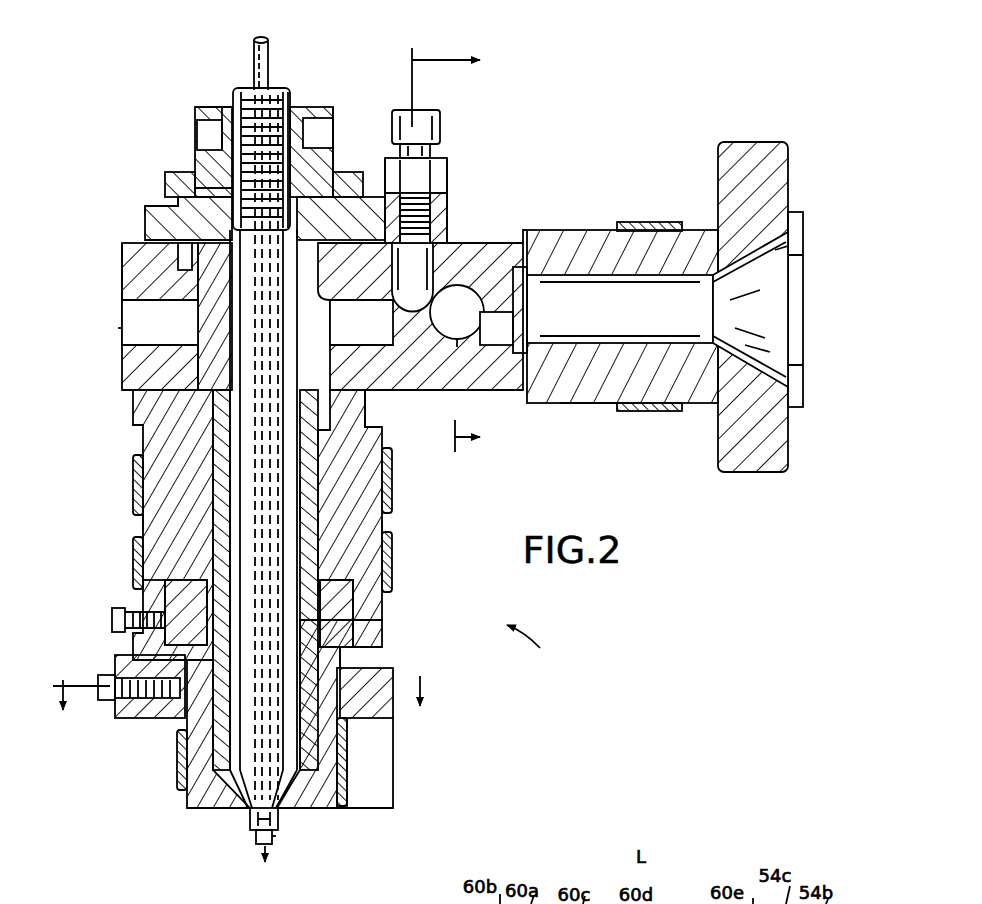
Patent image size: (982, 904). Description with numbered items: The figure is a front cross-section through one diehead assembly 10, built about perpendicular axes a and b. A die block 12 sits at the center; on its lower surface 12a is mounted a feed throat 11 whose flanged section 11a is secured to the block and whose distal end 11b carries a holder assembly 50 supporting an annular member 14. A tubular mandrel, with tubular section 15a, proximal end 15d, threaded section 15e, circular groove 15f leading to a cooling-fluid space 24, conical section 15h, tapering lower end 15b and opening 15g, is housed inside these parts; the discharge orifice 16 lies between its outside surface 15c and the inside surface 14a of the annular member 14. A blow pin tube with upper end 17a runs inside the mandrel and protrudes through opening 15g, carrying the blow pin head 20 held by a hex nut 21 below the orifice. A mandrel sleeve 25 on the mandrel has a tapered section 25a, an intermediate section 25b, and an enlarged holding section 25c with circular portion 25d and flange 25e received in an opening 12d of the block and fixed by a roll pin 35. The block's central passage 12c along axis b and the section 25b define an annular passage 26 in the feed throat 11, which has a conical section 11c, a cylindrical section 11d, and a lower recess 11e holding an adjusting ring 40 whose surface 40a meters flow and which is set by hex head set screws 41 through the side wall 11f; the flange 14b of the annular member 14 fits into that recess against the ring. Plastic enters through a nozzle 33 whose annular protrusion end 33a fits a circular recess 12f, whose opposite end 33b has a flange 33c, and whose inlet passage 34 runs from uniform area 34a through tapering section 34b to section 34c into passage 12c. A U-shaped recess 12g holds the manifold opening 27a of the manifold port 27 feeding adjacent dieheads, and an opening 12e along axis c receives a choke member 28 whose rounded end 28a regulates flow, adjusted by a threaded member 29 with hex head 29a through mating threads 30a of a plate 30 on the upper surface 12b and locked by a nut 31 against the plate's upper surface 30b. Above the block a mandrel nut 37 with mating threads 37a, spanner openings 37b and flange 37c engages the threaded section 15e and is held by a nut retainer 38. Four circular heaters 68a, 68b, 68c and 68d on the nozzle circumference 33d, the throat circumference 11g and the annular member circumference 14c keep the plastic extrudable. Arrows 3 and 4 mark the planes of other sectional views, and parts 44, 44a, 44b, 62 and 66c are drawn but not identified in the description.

The diehead assembly 10 is at (534, 646).
The feed throat 11 is at (340, 478).
The flanged section 11a is at (150, 406).
The distal end 11b is at (134, 660).
The conical section 11c is at (160, 418).
The cylindrical section 11d is at (176, 498).
The lower cylindrical recess 11e is at (176, 590).
The side wall 11f is at (140, 647).
The outside circumference 11g is at (386, 538).
The die block 12 is at (524, 395).
The lower surface 12a is at (140, 380).
The upper surface 12b is at (332, 230).
The central passage 12c is at (370, 402).
The opening 12d is at (176, 290).
The opening 12e is at (504, 243).
The circular recess 12f is at (528, 260).
The U-cross-sectioned recess 12g is at (482, 330).
The annular member 14 is at (370, 718).
The inside surface 14a is at (348, 790).
The flange 14b is at (354, 647).
The outside circumference 14c is at (364, 806).
The tubular section 15a is at (262, 408).
The lower end 15b is at (215, 760).
The outside surface 15c is at (302, 800).
The proximal end 15d is at (262, 95).
The threaded section 15e is at (288, 110).
The circular groove 15f is at (180, 253).
The circular cross-sectioned opening 15g is at (280, 810).
The conical section 15h is at (222, 810).
The discharge orifice 16 is at (246, 806).
The upper end of blow pin 17a is at (268, 85).
The blow pin head 20 is at (252, 830).
The hex nut 21 is at (277, 845).
The space 24 is at (213, 335).
The mandrel sleeve 25 is at (222, 468).
The tapered section 25a is at (319, 660).
The intermediate section 25b is at (310, 500).
The enlarged holding section 25c is at (128, 303).
The circular cross-sectioned portion 25d is at (332, 298).
The flange 25e is at (350, 178).
The annular passage 26 is at (356, 468).
The manifold port 27 is at (443, 305).
The manifold opening 27a is at (450, 347).
The choke member 28 is at (411, 302).
The rounded end 28a is at (398, 336).
The threaded member 29 is at (448, 226).
The hex head 29a is at (438, 124).
The plate 30 is at (448, 205).
The mating threads 30a is at (447, 192).
The upper surface 30b is at (432, 152).
The nut 31 is at (392, 165).
The nozzle 33 is at (585, 403).
The annular protrusion end 33a is at (528, 298).
The opposite end 33b is at (798, 216).
The flange 33c is at (775, 158).
The outside circumference 33d is at (600, 404).
The injector inlet passage 34 is at (782, 251).
The uniform circular cross-sectioned area 34a is at (796, 270).
The tapered section 34b is at (764, 313).
The uniform section 34c is at (632, 323).
The roll pin 35 is at (172, 258).
The mandrel nut 37 is at (215, 107).
The mating threads 37a is at (197, 110).
The spanner openings 37b is at (202, 136).
The flange 37c is at (196, 188).
The nut retainer 38 is at (180, 180).
The adjusting ring 40 is at (176, 610).
The surface 40a is at (340, 615).
The hex head set screws 41 is at (112, 620).
The collar 44 is at (158, 232).
The collar step 44a is at (172, 210).
The collar edge 44b is at (146, 203).
The holder assembly 50 is at (140, 718).
The clamp screw head 62 is at (110, 700).
The clamp screw thread 66c is at (115, 688).
The circular heater 68a is at (645, 222).
The circular heater 68b is at (137, 510).
The circular heater 68c is at (136, 555).
The circular heater 68d is at (348, 760).
The section line 3 is at (240, 712).
The section line 4 is at (459, 251).
The axis a— a is at (263, 866).
The axis b— b is at (122, 326).
The axis c— c is at (412, 330).